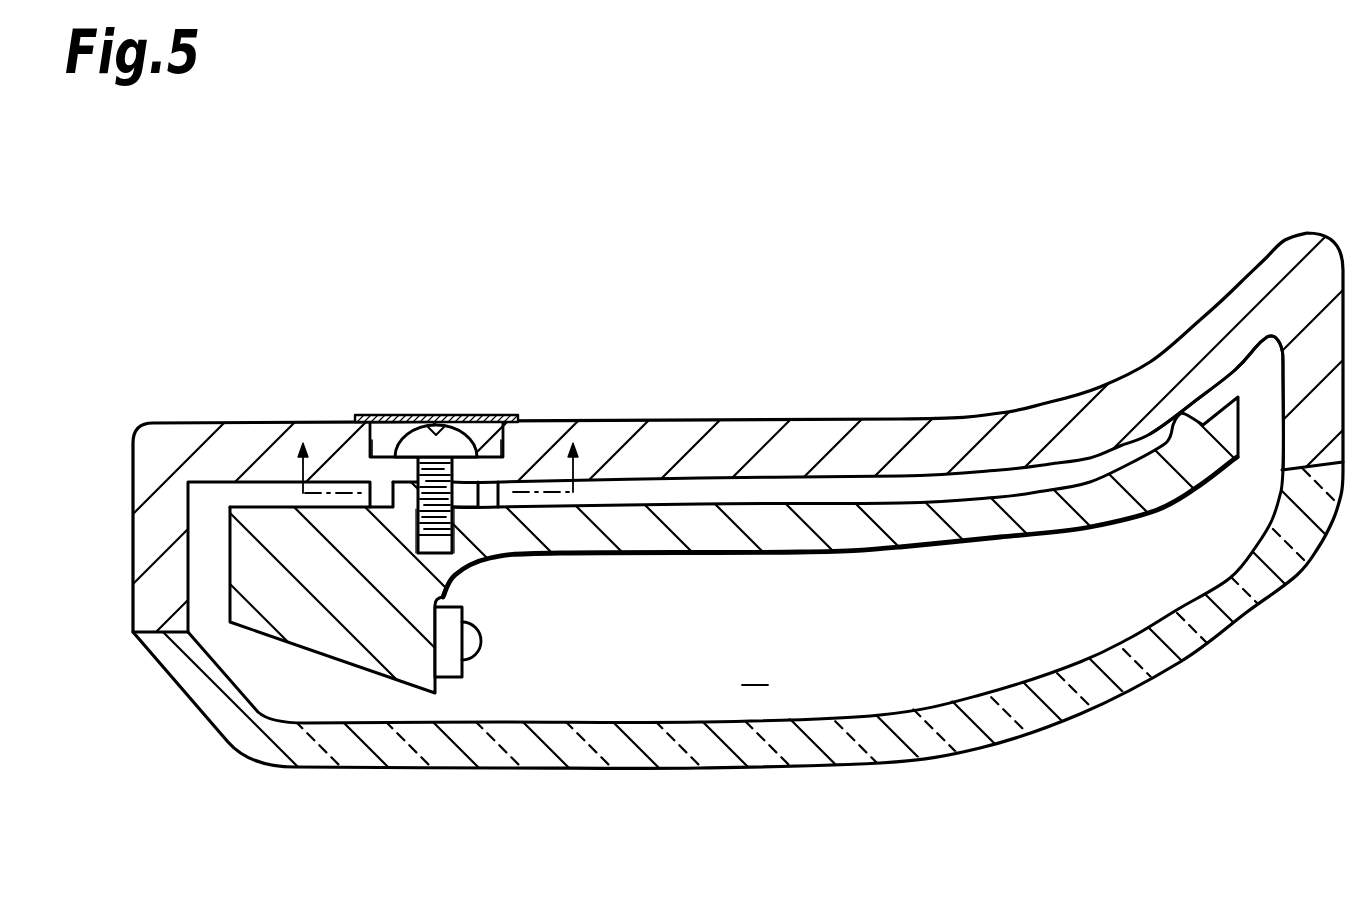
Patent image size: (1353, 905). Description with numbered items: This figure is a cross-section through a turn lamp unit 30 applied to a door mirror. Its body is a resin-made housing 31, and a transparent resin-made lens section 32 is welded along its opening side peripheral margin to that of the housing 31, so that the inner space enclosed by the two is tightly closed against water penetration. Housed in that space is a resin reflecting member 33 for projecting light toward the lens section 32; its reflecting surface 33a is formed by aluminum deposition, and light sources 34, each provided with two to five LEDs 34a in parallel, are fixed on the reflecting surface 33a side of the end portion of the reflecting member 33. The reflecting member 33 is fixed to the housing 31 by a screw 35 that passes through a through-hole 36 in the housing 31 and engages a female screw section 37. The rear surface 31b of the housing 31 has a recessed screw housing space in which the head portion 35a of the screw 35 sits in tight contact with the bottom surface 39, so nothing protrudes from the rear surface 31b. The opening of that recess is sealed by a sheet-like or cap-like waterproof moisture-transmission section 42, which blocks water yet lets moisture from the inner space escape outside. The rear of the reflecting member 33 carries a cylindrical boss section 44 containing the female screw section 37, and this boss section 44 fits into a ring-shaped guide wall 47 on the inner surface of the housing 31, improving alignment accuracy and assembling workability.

The turn lamp unit 30 is at (180, 267).
The housing 31 is at (925, 425).
The rear surface 31b is at (788, 424).
The lens section 32 is at (1000, 727).
The reflecting member 33 is at (713, 518).
The reflecting surface 33a is at (990, 555).
The light source 34 is at (485, 611).
The LED 34a is at (473, 640).
The screw 35 is at (380, 540).
The head portion 35a is at (468, 436).
The through-hole 36 is at (455, 483).
The female screw section 37 is at (405, 520).
The bottom surface 39 is at (390, 458).
The waterproof moisture-transmission section 42 is at (397, 416).
The boss section 44 is at (505, 545).
The guide wall 47 is at (378, 490).